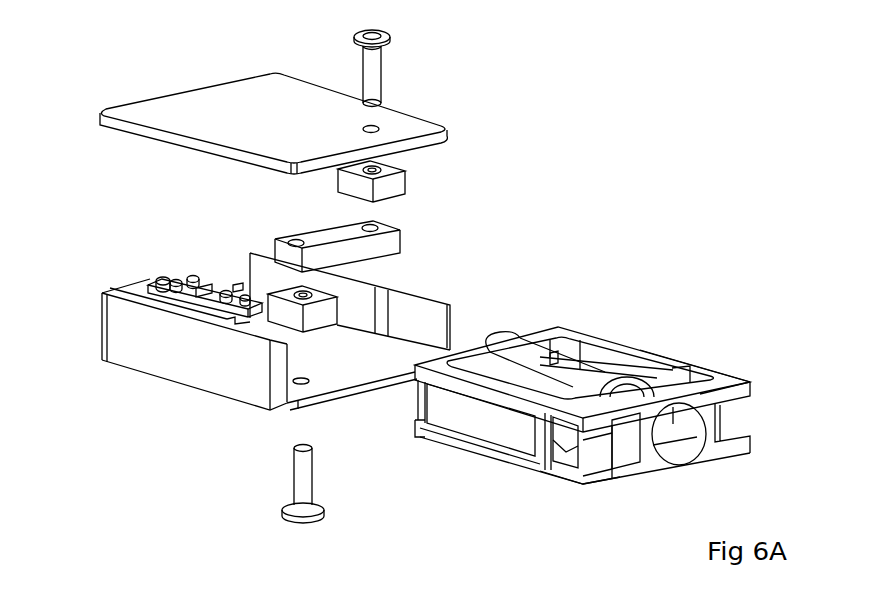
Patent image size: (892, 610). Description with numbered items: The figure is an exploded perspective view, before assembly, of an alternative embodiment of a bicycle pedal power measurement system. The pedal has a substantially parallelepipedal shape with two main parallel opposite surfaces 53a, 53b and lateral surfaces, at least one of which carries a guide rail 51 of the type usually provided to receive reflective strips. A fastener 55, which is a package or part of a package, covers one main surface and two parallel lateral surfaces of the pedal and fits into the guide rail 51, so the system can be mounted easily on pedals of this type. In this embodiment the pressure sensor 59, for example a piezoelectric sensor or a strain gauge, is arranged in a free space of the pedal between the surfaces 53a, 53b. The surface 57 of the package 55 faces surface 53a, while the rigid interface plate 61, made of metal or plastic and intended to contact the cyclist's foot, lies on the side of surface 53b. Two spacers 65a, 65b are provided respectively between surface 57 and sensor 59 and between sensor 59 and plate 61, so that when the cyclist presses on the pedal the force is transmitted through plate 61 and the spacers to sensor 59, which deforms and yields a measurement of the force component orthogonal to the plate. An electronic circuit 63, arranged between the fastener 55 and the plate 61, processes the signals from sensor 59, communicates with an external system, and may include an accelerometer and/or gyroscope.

The guide rail 51 is at (488, 414).
The main surface of the pedal 53a is at (545, 482).
The main surface of the pedal 53b is at (678, 354).
The fastener 55 is at (147, 345).
The surface of the package 57 is at (340, 395).
The pressure sensor 59 is at (388, 243).
The interface plate 61 is at (407, 123).
The electronic circuit 63 is at (183, 280).
The spacer 65a is at (315, 313).
The spacer 65b is at (390, 185).